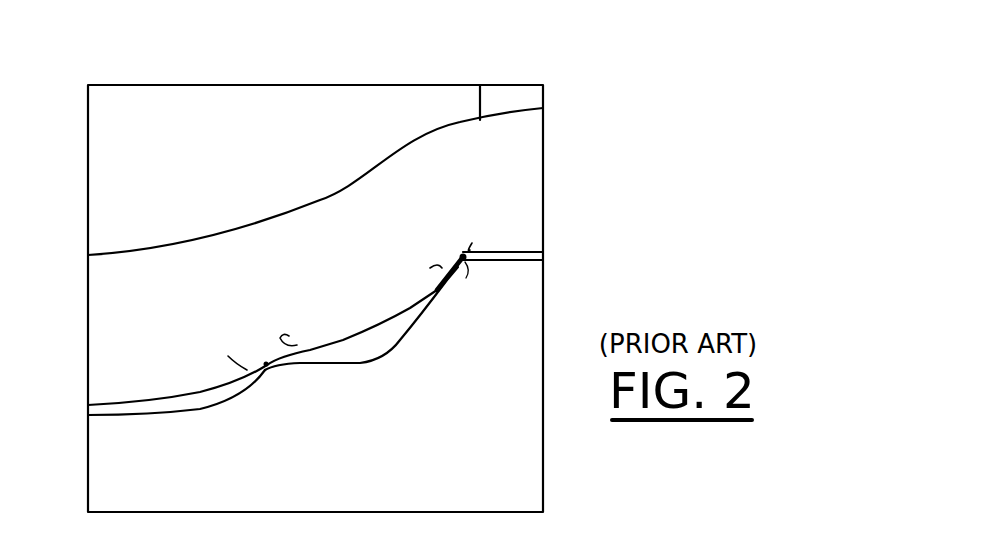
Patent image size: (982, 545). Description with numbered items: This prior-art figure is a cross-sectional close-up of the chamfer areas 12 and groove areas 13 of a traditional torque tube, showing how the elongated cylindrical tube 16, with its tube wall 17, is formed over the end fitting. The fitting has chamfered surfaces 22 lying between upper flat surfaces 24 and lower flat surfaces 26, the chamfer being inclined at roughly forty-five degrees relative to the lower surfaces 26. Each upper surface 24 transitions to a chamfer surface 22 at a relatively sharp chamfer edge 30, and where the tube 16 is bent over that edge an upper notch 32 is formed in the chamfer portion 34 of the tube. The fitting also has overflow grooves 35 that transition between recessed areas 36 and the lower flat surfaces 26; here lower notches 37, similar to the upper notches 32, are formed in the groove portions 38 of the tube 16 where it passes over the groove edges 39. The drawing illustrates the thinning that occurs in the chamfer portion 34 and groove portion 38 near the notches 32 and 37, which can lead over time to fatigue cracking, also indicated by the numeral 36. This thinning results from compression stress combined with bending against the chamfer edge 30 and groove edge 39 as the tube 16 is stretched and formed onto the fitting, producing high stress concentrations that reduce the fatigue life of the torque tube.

The chamfer area 12 is at (493, 328).
The groove area 13 is at (343, 395).
The elongated cylindrical tube 16 is at (480, 85).
The tube wall 17 is at (533, 165).
The chamfered surface 22 is at (421, 322).
The upper flat surface 24 is at (516, 260).
The lower flat surface 26 is at (322, 360).
The chamfer edge 30 is at (478, 305).
The upper notch 32 is at (462, 256).
The chamfer portion 34 is at (443, 247).
The overflow groove 35 is at (237, 393).
The recessed area 36 is at (475, 248).
The lower notch 37 is at (267, 353).
The groove portion 38 is at (254, 348).
The groove edge 39 is at (278, 368).